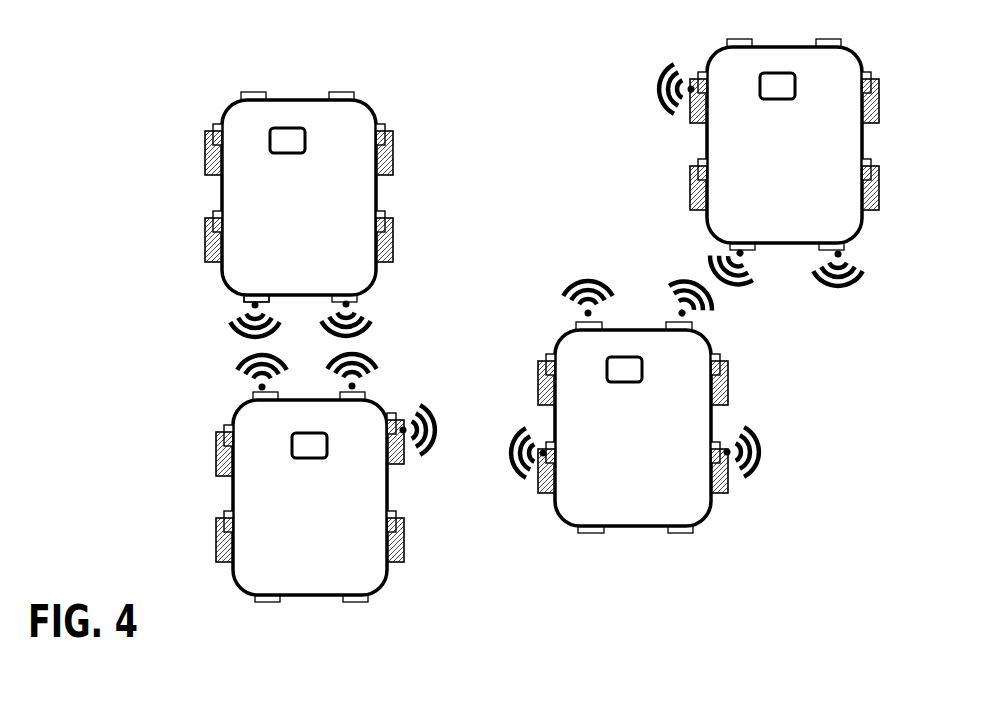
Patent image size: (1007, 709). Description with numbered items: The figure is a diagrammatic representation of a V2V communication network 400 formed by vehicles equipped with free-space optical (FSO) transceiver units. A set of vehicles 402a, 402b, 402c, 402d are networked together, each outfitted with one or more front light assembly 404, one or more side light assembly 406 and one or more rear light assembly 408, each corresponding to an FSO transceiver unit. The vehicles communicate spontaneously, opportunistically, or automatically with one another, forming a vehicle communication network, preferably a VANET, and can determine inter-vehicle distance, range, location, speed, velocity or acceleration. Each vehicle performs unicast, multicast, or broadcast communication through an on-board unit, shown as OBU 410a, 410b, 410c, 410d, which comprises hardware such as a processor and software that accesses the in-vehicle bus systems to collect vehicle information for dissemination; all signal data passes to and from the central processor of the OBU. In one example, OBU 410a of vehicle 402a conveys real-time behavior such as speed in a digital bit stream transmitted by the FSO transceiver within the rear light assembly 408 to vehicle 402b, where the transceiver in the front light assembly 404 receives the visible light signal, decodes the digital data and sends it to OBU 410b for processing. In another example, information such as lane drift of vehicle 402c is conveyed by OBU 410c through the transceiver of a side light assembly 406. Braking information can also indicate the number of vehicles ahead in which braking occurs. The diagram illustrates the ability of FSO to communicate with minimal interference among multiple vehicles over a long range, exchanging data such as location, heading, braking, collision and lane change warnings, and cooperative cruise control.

The V2V communication network 400 is at (152, 122).
The vehicle 402a is at (280, 181).
The vehicle 402b is at (342, 512).
The vehicle 402c is at (632, 390).
The vehicle 402d is at (803, 179).
The front light assembly 404 is at (332, 92).
The side light assembly 406 is at (212, 140).
The rear light assembly 408 is at (237, 303).
The OBU 410a is at (283, 153).
The OBU 410b is at (305, 458).
The OBU 410c is at (620, 382).
The OBU 410d is at (773, 99).